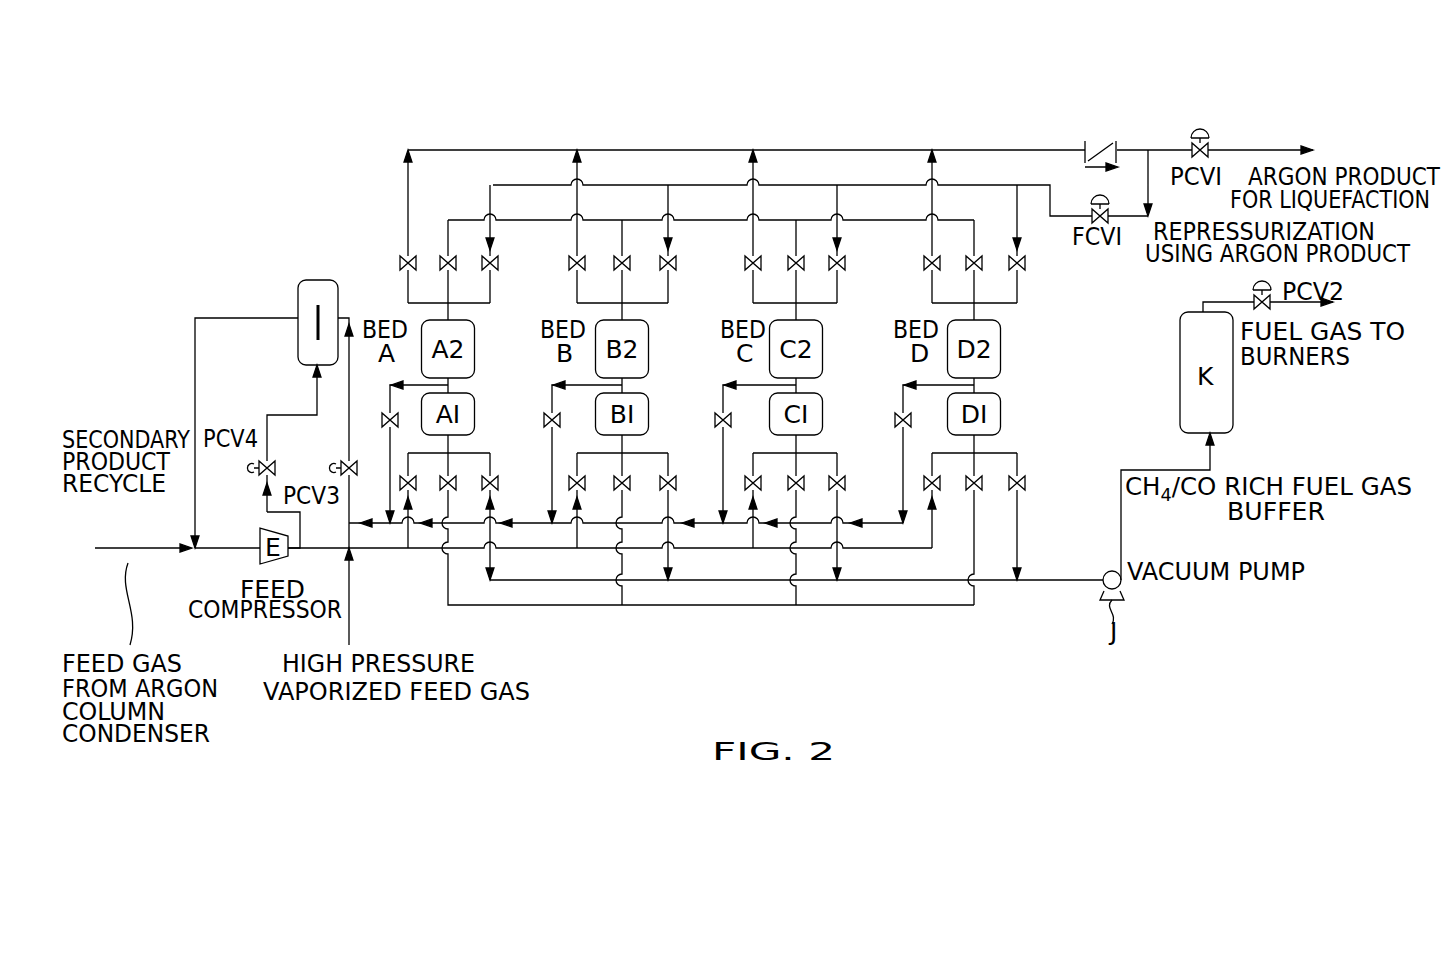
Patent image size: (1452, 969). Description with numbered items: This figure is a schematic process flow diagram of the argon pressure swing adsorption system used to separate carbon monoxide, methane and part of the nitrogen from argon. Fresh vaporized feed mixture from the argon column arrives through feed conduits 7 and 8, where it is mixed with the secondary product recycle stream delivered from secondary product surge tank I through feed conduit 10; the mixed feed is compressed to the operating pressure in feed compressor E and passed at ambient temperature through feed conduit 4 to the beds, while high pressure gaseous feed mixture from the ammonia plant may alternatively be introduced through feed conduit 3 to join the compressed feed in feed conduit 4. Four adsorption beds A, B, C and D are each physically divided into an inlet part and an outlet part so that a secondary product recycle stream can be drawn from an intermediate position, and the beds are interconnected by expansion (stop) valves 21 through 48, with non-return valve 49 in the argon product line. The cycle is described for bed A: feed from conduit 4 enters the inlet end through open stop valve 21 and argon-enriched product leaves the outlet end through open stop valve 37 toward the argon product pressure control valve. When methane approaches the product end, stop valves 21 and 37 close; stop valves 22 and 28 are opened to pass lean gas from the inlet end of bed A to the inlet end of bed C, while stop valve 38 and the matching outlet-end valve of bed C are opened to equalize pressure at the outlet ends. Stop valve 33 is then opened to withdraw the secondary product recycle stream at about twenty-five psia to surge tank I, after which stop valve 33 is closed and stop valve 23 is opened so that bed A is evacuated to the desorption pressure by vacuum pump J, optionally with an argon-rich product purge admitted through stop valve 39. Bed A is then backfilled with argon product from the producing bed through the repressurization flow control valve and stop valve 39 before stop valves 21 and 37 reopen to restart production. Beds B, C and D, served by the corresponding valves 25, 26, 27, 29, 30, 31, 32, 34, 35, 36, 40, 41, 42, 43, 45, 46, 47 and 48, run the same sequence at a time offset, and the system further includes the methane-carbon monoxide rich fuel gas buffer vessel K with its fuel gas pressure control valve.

The feed conduit 3 is at (350, 587).
The feed conduit 4 is at (311, 548).
The feed conduit 7 is at (138, 547).
The feed conduit 8 is at (224, 547).
The feed conduit 10 is at (195, 378).
The stop valve 21 is at (403, 481).
The stop valve 22 is at (444, 486).
The stop valve 23 is at (484, 486).
The expansion valve 25 is at (615, 486).
The expansion valve 26 is at (660, 486).
The expansion valve 27 is at (746, 484).
The stop valve 28 is at (790, 486).
The expansion valve 29 is at (572, 484).
The expansion valve 30 is at (925, 484).
The expansion valve 31 is at (968, 486).
The expansion valve 32 is at (1010, 486).
The stop valve 33 is at (383, 420).
The expansion valve 34 is at (545, 420).
The expansion valve 35 is at (716, 420).
The expansion valve 36 is at (896, 420).
The stop valve 37 is at (400, 260).
The stop valve 38 is at (441, 262).
The stop valve 39 is at (484, 262).
The expansion valve 40 is at (569, 262).
The expansion valve 41 is at (614, 262).
The expansion valve 42 is at (660, 262).
The expansion valve 43 is at (745, 262).
The expansion valve 45 is at (829, 262).
The expansion valve 46 is at (924, 262).
The expansion valve 47 is at (966, 262).
The expansion valve 48 is at (1009, 262).
The non-return valve 49 is at (1101, 134).